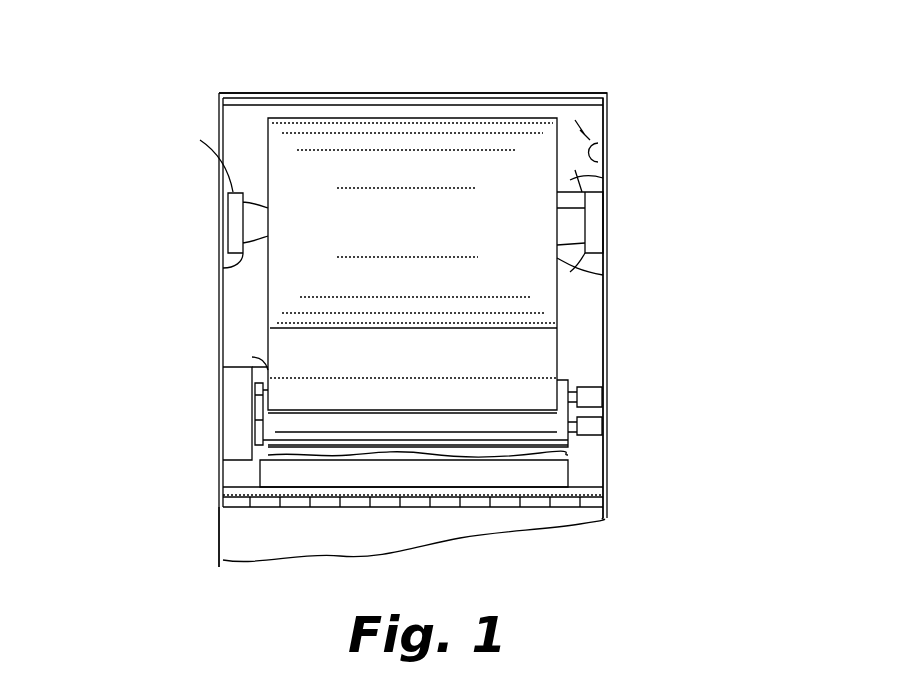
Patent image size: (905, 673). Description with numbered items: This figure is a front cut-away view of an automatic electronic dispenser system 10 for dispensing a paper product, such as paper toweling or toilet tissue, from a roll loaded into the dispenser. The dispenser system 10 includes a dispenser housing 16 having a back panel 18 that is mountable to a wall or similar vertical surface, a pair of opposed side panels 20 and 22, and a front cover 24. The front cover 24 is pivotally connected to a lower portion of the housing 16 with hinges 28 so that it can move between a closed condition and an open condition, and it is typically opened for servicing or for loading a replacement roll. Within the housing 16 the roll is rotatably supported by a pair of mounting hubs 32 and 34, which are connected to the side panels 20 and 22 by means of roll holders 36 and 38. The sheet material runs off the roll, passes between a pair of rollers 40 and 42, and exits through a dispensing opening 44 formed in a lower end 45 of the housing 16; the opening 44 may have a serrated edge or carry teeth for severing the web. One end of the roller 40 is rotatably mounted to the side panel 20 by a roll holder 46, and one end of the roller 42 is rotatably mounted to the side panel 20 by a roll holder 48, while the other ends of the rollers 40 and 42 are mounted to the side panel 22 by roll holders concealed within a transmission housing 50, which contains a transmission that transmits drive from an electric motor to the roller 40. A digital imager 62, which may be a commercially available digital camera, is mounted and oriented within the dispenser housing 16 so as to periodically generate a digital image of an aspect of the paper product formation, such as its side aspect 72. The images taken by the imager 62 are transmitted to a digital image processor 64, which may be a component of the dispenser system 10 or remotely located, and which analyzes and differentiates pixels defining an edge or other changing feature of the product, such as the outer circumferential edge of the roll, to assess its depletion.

The automatic electronic dispenser system 10 is at (652, 97).
The dispenser housing 16 is at (218, 322).
The back panel 18 is at (262, 318).
The side panel 20 is at (607, 315).
The side panel 22 is at (219, 122).
The front cover 24 is at (245, 537).
The hinges 28 is at (288, 507).
The mounting hub 32 is at (590, 272).
The mounting hub 34 is at (243, 262).
The roll holder 36 is at (590, 233).
The roll holder 38 is at (200, 140).
The roller 40 is at (255, 390).
The roller 42 is at (420, 405).
The dispensing opening 44 is at (437, 480).
The lower end 45 is at (237, 480).
The roll holder 46 is at (605, 377).
The roll holder 48 is at (605, 447).
The transmission housing 50 is at (240, 436).
The digital imager 62 is at (603, 153).
The digital image processor 64 is at (252, 360).
The side aspect 72 is at (598, 178).